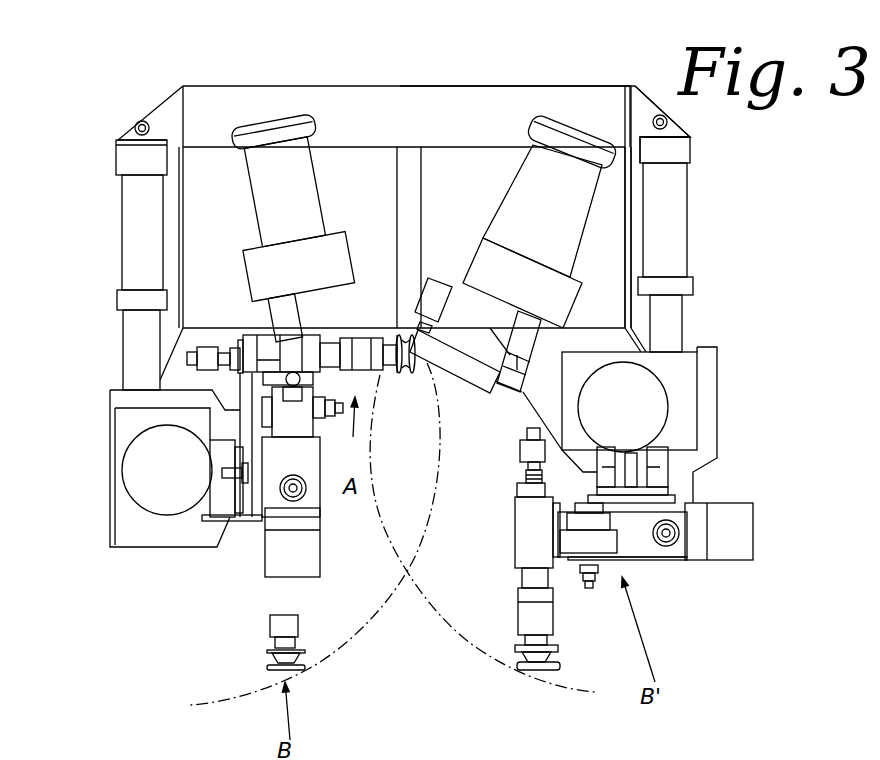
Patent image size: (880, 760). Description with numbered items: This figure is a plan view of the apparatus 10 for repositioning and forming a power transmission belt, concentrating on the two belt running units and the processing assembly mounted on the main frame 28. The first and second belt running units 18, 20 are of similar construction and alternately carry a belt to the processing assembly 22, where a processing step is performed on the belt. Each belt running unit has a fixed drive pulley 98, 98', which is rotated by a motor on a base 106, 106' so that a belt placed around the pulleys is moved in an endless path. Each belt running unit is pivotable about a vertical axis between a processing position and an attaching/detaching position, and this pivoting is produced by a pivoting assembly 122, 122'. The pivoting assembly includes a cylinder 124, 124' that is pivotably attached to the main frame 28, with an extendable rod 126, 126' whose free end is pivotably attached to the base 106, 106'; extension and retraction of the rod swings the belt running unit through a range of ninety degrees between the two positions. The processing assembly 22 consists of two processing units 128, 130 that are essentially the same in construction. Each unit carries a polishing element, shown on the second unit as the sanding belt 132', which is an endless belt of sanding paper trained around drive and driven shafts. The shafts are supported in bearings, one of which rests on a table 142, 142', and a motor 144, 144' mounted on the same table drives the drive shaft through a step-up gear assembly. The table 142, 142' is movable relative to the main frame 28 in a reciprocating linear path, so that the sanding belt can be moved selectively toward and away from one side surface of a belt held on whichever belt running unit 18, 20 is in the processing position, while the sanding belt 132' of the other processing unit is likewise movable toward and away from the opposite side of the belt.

The apparatus 10 is at (740, 207).
The first belt running unit 18 is at (250, 588).
The second belt running unit 20 is at (682, 578).
The processing assembly 22 is at (506, 240).
The main frame 28 is at (583, 98).
The drive pulley 98 is at (341, 442).
The drive pulley 98' is at (500, 701).
The base 106 is at (186, 496).
The base 106' is at (693, 425).
The pivoting assembly 122 is at (89, 145).
The pivoting assembly 122' is at (735, 143).
The cylinder 124 is at (106, 242).
The cylinder 124' is at (732, 229).
The extendable rod 126 is at (102, 350).
The extendable rod 126' is at (733, 323).
The processing unit 128 is at (325, 92).
The processing unit 130 is at (597, 223).
The polishing element 132' is at (486, 392).
The table 142 is at (292, 291).
The table 142' is at (462, 282).
The motor 144 is at (293, 228).
The motor 144' is at (539, 254).